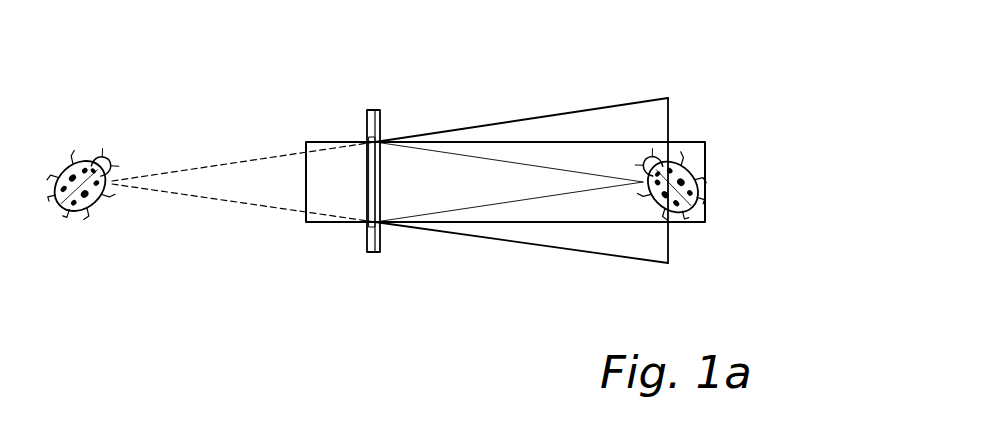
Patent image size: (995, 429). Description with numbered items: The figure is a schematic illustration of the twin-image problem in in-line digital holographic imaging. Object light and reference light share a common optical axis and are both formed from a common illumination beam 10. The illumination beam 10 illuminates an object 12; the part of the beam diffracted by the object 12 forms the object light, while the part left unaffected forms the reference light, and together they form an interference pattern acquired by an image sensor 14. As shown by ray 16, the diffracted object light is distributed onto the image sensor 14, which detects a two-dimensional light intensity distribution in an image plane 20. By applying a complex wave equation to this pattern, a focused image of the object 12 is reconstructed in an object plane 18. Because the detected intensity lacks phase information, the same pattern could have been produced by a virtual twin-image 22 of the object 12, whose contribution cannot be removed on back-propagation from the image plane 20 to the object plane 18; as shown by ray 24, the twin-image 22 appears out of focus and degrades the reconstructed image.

The illumination beam 10 is at (705, 150).
The object 12 is at (695, 202).
The image sensor 14 is at (367, 222).
The ray 16 is at (532, 198).
The object plane 18 is at (668, 98).
The image plane 20 is at (377, 117).
The virtual twin-image 22 is at (88, 160).
The ray 24 is at (455, 232).